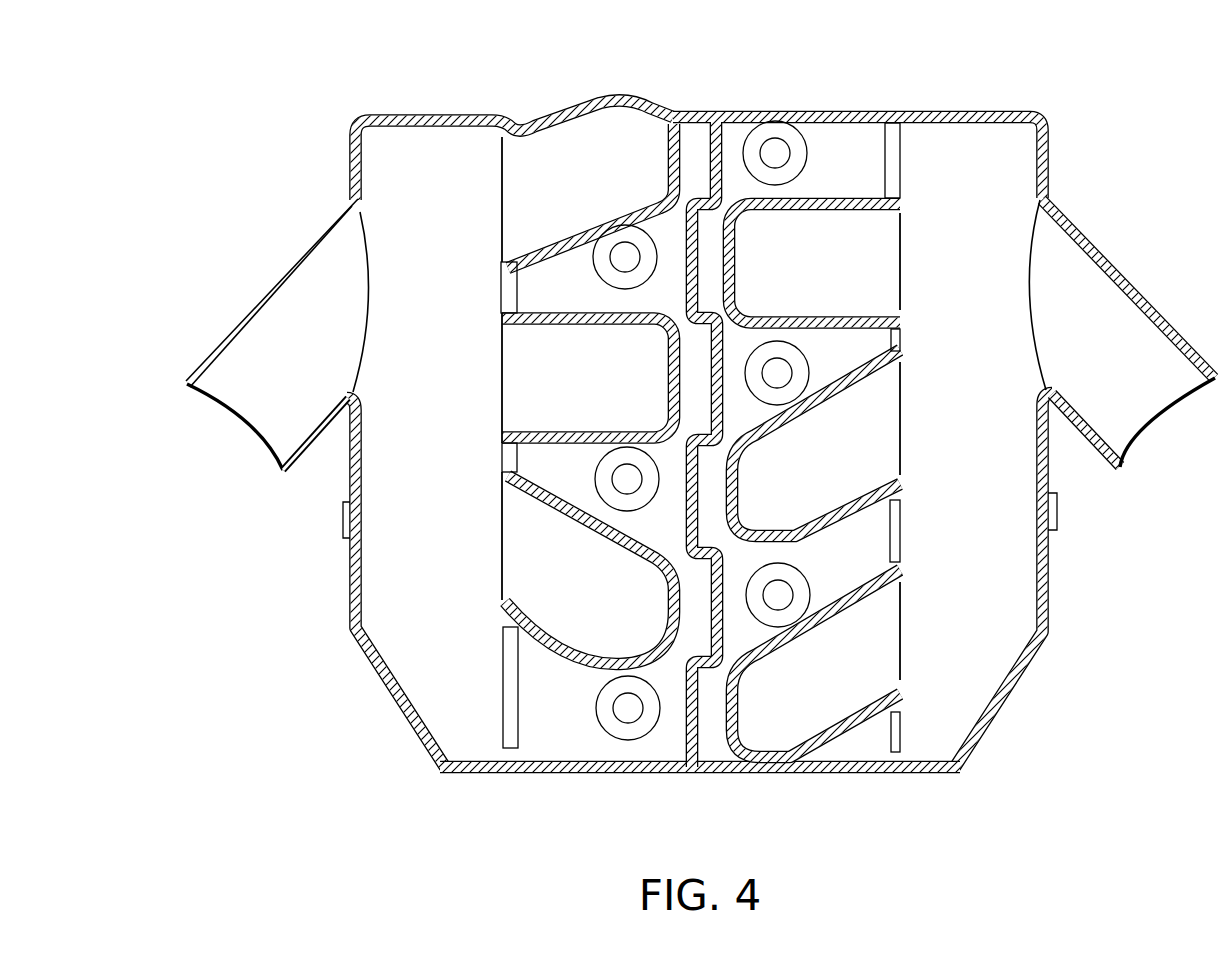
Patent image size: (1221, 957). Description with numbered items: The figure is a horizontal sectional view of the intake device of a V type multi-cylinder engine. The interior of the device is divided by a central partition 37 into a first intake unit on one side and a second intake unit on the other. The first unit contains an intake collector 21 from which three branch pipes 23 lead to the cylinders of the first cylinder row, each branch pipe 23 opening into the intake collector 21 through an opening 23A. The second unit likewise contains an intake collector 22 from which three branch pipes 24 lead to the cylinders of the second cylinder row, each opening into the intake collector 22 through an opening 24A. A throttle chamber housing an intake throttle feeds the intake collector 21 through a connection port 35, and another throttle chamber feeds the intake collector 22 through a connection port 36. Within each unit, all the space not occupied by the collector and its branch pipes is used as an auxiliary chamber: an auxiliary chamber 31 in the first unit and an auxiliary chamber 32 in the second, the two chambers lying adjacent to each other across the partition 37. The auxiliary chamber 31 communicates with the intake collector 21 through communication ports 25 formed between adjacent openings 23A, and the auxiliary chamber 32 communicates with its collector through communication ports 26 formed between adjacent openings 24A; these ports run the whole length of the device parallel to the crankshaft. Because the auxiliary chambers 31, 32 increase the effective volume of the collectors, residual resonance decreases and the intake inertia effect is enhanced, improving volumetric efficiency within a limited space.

The intake collector 21 is at (980, 140).
The intake collector 22 is at (428, 140).
The branch pipe 23 is at (797, 272).
The opening 23A is at (900, 262).
The branch pipe 24 is at (565, 182).
The opening 24A is at (500, 190).
The communication port 25 is at (887, 150).
The communication port 26 is at (508, 292).
The auxiliary chamber 31 is at (840, 140).
The auxiliary chamber 32 is at (602, 745).
The connection port 35 is at (1085, 270).
The connection port 36 is at (320, 290).
The partition 37 is at (690, 730).